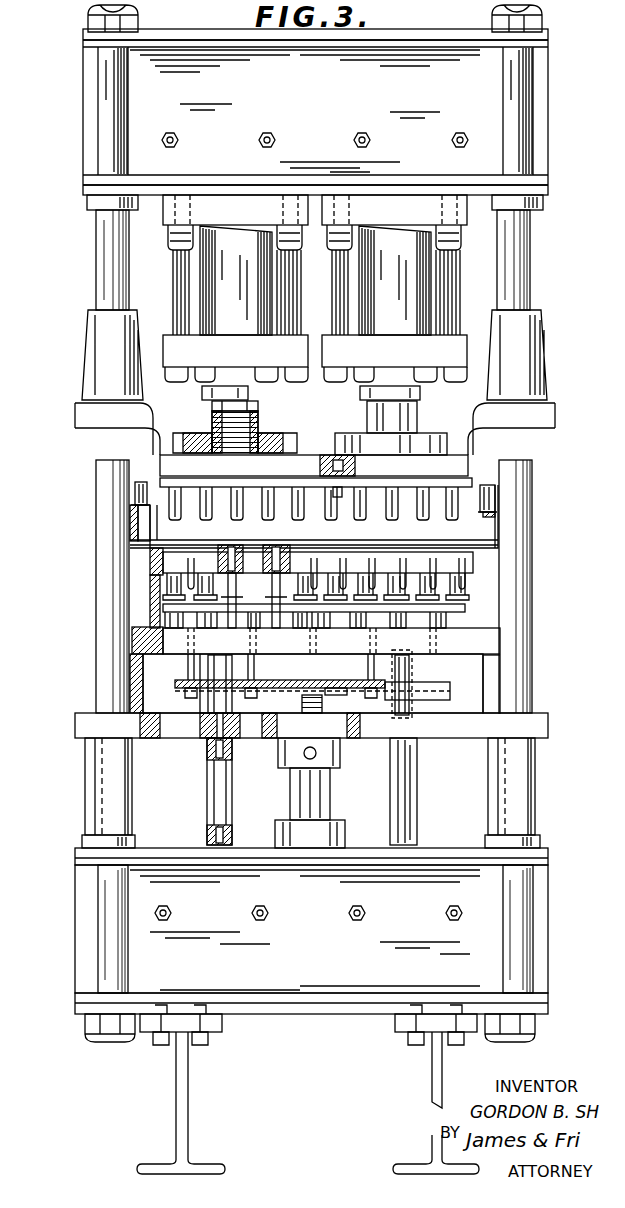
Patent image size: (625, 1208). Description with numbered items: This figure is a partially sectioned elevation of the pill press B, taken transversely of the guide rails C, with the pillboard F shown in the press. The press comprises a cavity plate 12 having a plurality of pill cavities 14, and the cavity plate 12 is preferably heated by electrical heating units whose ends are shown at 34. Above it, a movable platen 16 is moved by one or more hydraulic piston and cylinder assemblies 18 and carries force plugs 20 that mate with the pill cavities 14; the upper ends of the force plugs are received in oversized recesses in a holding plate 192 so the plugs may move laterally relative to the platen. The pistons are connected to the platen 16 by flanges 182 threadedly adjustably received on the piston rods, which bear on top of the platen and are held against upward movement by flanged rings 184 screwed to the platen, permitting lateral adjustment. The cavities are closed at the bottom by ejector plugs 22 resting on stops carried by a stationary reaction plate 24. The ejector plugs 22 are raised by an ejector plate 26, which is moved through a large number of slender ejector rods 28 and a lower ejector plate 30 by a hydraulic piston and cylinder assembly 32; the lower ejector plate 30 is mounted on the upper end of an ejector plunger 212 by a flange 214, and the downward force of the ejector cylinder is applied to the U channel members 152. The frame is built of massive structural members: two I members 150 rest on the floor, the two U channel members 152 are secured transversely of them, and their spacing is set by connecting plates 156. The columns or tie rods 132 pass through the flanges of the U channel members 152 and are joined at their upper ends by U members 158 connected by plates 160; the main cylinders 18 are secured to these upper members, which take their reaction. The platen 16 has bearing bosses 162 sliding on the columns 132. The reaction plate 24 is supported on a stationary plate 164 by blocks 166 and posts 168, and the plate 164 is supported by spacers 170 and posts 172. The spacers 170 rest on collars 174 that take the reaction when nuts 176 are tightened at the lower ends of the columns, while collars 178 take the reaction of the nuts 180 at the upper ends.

The cavity plate 12 is at (475, 557).
The pill cavities 14 is at (236, 548).
The movable platen 16 is at (466, 472).
The hydraulic piston and cylinder assemblies 18 is at (227, 292).
The force plugs 20 is at (176, 521).
The ejector plugs 22 is at (460, 620).
The stationary reaction plate 24 is at (490, 648).
The ejector plate 26 is at (468, 606).
The ejector rods 28 is at (190, 672).
The lower ejector plate 30 is at (324, 690).
The hydraulic piston and cylinder assembly 32 is at (320, 800).
The electrical heating units 34 is at (465, 571).
The columns 132 is at (105, 240).
The I members 150 is at (187, 1070).
The U channel members 152 is at (543, 906).
The connecting plates 156 is at (548, 855).
The U members 158 is at (545, 100).
The plates 160 is at (548, 45).
The bearing bosses 162 is at (86, 372).
The stationary plate 164 is at (548, 730).
The blocks 166 is at (130, 680).
The posts 168 is at (232, 668).
The spacers 170 is at (100, 782).
The posts 172 is at (215, 790).
The collars 174 is at (84, 837).
The nuts 176 is at (86, 1022).
The collars 178 is at (87, 200).
The nuts 180 is at (86, 18).
The flanges 182 is at (262, 438).
The flanged rings 184 is at (277, 440).
The holding plate 192 is at (468, 485).
The ejector plunger 212 is at (322, 705).
The flange 214 is at (337, 688).
The pill press B is at (542, 275).
The guide rails C is at (490, 512).
The pillboard F is at (483, 540).